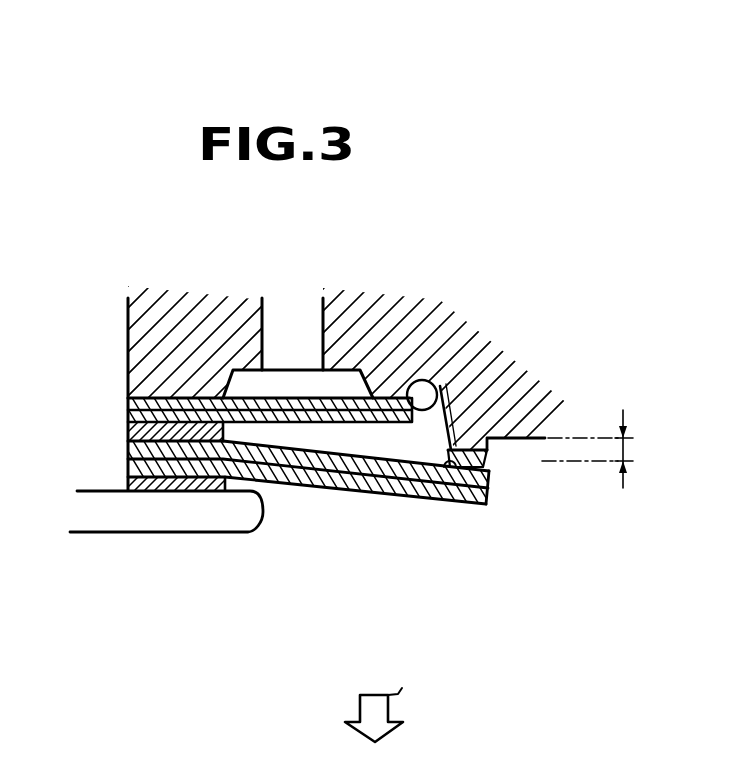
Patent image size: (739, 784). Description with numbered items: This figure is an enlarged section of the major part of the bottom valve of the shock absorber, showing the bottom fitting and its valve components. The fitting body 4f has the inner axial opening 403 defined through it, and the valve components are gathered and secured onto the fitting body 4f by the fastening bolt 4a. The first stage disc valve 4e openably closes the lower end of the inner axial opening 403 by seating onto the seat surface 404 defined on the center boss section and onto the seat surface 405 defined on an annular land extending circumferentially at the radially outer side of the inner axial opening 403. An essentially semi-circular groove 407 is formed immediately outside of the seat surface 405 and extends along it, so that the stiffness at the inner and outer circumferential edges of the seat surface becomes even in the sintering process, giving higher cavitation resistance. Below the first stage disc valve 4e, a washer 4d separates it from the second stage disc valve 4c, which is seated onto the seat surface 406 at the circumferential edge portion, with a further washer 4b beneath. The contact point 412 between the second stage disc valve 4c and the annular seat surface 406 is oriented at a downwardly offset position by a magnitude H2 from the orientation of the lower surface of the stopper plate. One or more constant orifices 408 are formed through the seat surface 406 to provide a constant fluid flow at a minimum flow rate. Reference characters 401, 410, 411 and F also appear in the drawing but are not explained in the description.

The housing body 401 is at (128, 354).
The fitting body 4f is at (147, 323).
The inner axial opening 403 is at (297, 347).
The projection 410 is at (250, 379).
The semi-circular groove 407 is at (422, 388).
The seat surface 405 is at (450, 383).
The first stage disc valve 4e is at (316, 392).
The seat surface 404 is at (143, 395).
The washer 4d is at (140, 432).
The plate joint line 411 is at (135, 440).
The second stage disc valve 4c is at (351, 494).
The seat surface 406 is at (468, 503).
The constant orifice 408 is at (488, 450).
The contact point 412 is at (449, 463).
The washer 4b is at (124, 493).
The fastening bolt 4a is at (236, 540).
The offset magnitude H2 is at (606, 449).
The force direction F is at (384, 707).